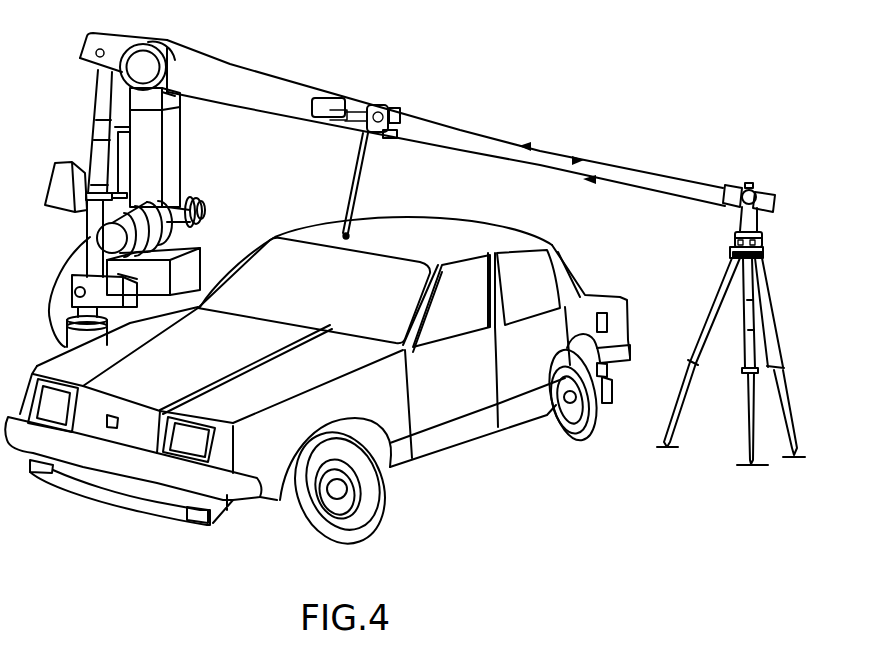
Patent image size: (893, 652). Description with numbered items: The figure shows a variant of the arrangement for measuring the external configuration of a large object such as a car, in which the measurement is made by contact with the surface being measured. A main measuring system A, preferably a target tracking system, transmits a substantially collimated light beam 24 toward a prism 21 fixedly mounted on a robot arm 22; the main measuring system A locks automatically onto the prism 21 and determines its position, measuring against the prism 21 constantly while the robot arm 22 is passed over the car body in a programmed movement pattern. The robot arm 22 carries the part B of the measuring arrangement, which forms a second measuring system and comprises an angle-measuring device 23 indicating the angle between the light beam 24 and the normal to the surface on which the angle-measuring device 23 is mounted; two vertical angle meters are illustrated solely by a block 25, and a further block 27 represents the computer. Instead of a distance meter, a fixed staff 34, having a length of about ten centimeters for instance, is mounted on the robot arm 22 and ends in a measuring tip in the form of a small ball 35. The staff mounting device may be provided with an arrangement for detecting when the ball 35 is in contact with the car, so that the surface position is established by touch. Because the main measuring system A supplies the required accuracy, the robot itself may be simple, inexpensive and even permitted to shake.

The robot arm 22 is at (290, 88).
The collimated light beam 24 is at (623, 186).
The vertical angle meters 25 is at (388, 100).
The computer 27 is at (321, 118).
The prism 21 is at (403, 110).
The angle-measuring device 23 is at (388, 137).
The fixed staff 34 is at (364, 200).
The ball 35 is at (348, 222).
The main measuring system A is at (784, 196).
The part of the measuring arrangement B is at (402, 81).